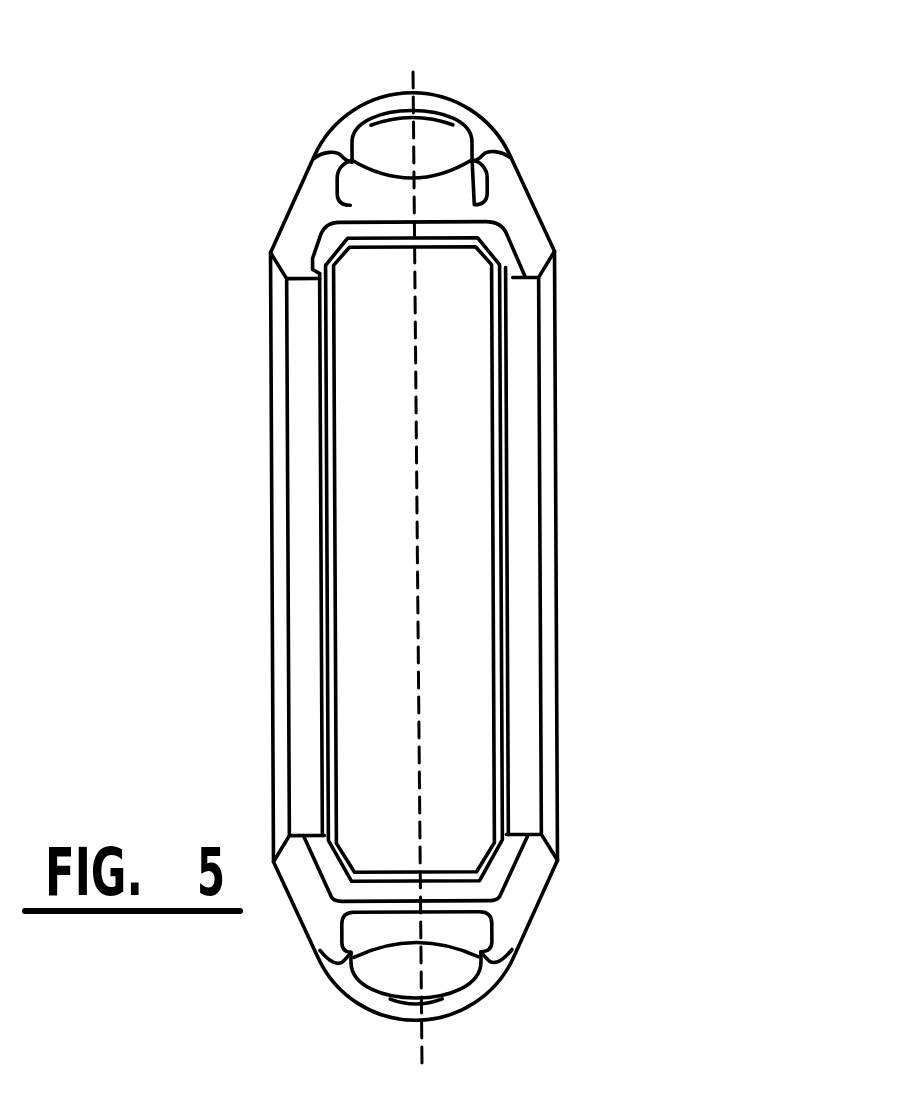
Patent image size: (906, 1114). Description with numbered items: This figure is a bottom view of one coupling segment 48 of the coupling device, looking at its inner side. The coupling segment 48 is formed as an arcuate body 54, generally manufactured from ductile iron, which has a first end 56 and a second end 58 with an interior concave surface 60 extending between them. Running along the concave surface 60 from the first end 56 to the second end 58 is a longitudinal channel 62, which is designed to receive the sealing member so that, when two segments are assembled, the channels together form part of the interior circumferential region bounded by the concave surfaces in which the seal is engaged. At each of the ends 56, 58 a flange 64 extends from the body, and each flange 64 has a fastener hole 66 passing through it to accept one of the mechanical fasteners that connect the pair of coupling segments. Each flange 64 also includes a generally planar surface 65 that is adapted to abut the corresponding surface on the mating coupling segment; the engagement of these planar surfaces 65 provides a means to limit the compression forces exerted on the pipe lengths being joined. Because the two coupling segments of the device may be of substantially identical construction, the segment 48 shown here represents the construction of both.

The coupling segment 48 is at (668, 445).
The arcuate body 54 is at (282, 503).
The first end 56 is at (505, 178).
The second end 58 is at (508, 933).
The interior concave surface 60 is at (517, 332).
The longitudinal channel 62 is at (488, 499).
The flange 64 is at (427, 88).
The generally planar surface 65 is at (530, 248).
The fastener hole 66 is at (438, 134).